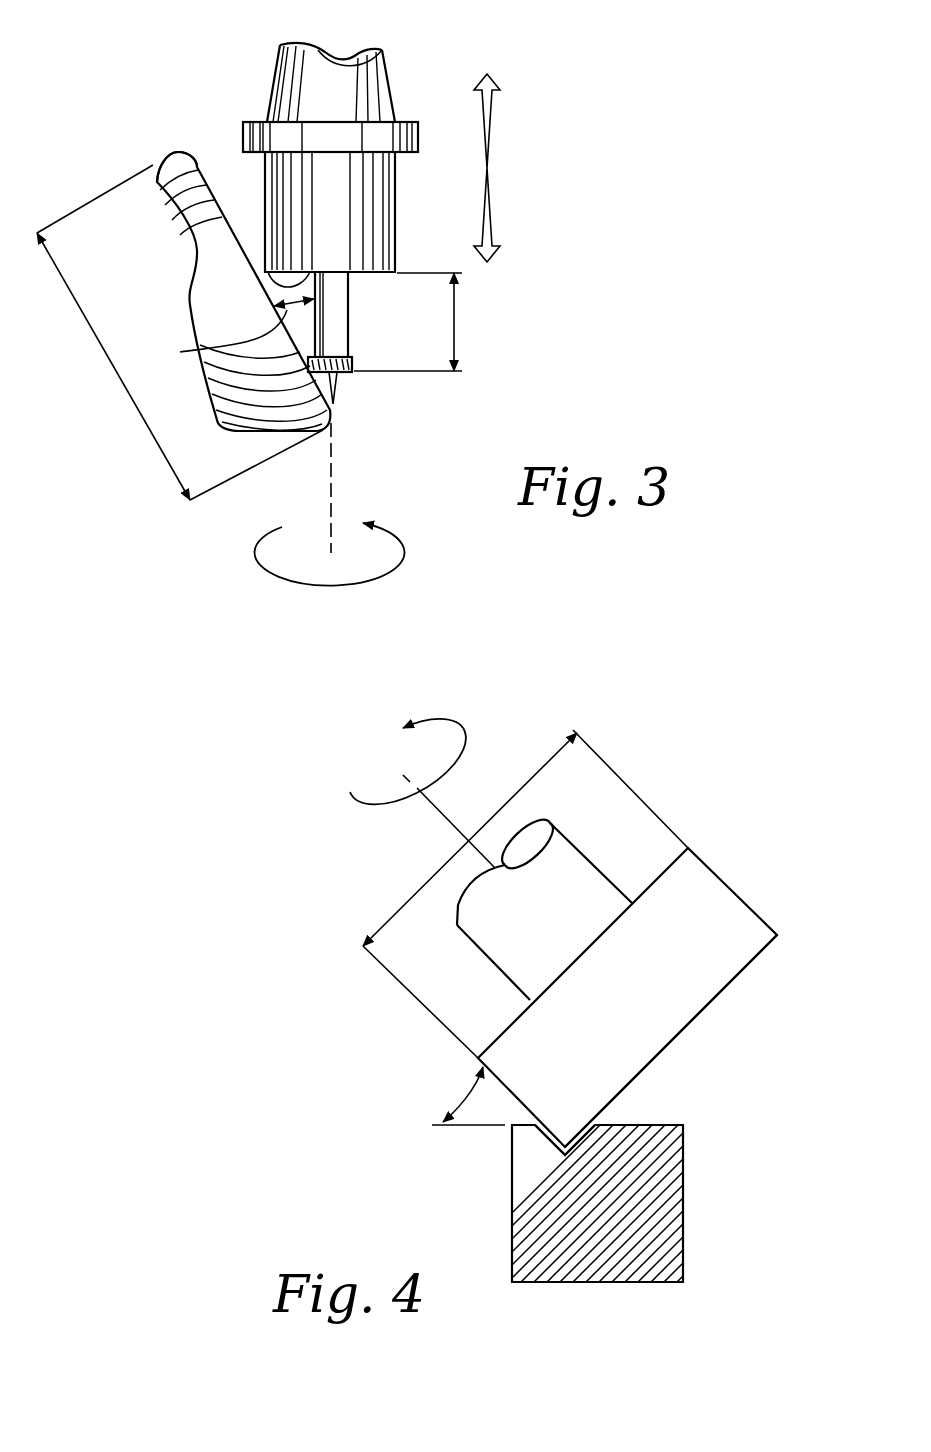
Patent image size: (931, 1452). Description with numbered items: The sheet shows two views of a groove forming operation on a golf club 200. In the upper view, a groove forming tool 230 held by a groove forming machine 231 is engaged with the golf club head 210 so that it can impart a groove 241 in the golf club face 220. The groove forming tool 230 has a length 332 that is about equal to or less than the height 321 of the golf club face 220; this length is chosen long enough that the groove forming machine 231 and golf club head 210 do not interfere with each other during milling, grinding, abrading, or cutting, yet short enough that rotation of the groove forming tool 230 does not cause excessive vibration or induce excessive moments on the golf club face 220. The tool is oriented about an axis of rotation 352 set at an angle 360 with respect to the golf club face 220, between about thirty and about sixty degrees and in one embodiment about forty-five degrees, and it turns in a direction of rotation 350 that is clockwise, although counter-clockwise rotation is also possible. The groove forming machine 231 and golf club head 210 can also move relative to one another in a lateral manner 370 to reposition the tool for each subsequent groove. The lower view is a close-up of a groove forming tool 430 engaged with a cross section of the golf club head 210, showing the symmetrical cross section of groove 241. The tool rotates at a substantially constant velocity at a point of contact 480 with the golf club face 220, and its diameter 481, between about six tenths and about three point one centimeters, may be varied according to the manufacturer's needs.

In FIG. 3, the golf club 200 is at (589, 419).
In FIG. 3, the golf club head 210 is at (207, 313).
In FIG. 4, the golf club head 210 is at (684, 1208).
In FIG. 3, the golf club face 220 is at (197, 166).
In FIG. 4, the golf club face 220 is at (672, 1125).
In FIG. 3, the groove forming tool 230 is at (333, 340).
In FIG. 3, the groove forming machine 231 is at (383, 213).
In FIG. 4, the groove 241 is at (633, 1110).
In FIG. 3, the height 321 is at (157, 443).
In FIG. 3, the length 332 is at (414, 322).
In FIG. 3, the direction of rotation 350 is at (372, 522).
In FIG. 4, the direction of rotation 350 is at (458, 722).
In FIG. 3, the axis of rotation 352 is at (333, 447).
In FIG. 4, the axis of rotation 352 is at (442, 813).
In FIG. 3, the angle 360 is at (223, 333).
In FIG. 4, the angle 360 is at (465, 1086).
In FIG. 3, the lateral manner 370 is at (490, 102).
In FIG. 4, the groove forming tool 430 is at (722, 877).
In FIG. 4, the point of contact 480 is at (566, 1132).
In FIG. 4, the diameter 481 is at (525, 894).